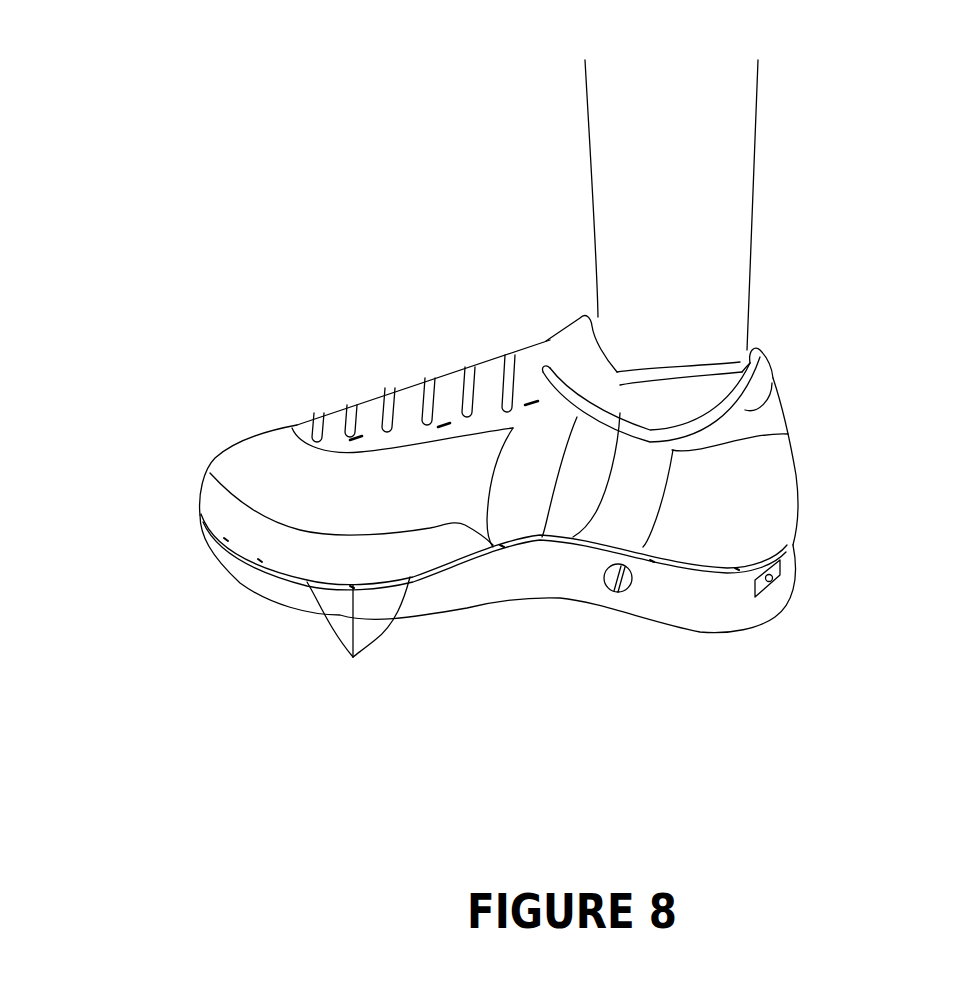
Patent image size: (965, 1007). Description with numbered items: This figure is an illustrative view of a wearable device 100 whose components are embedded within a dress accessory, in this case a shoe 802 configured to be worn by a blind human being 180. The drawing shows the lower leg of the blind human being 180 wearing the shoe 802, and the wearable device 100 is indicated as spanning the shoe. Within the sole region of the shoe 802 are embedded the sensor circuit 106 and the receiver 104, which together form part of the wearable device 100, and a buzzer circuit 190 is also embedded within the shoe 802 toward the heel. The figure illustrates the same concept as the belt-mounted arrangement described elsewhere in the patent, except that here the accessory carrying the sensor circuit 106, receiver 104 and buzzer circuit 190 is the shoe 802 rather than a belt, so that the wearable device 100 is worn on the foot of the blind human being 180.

The blind human being 180 is at (753, 195).
The shoe 802 is at (247, 440).
The wearable device 100 is at (524, 650).
The sensor circuit 106 is at (397, 639).
The receiver 104 is at (385, 639).
The buzzer circuit 190 is at (721, 623).